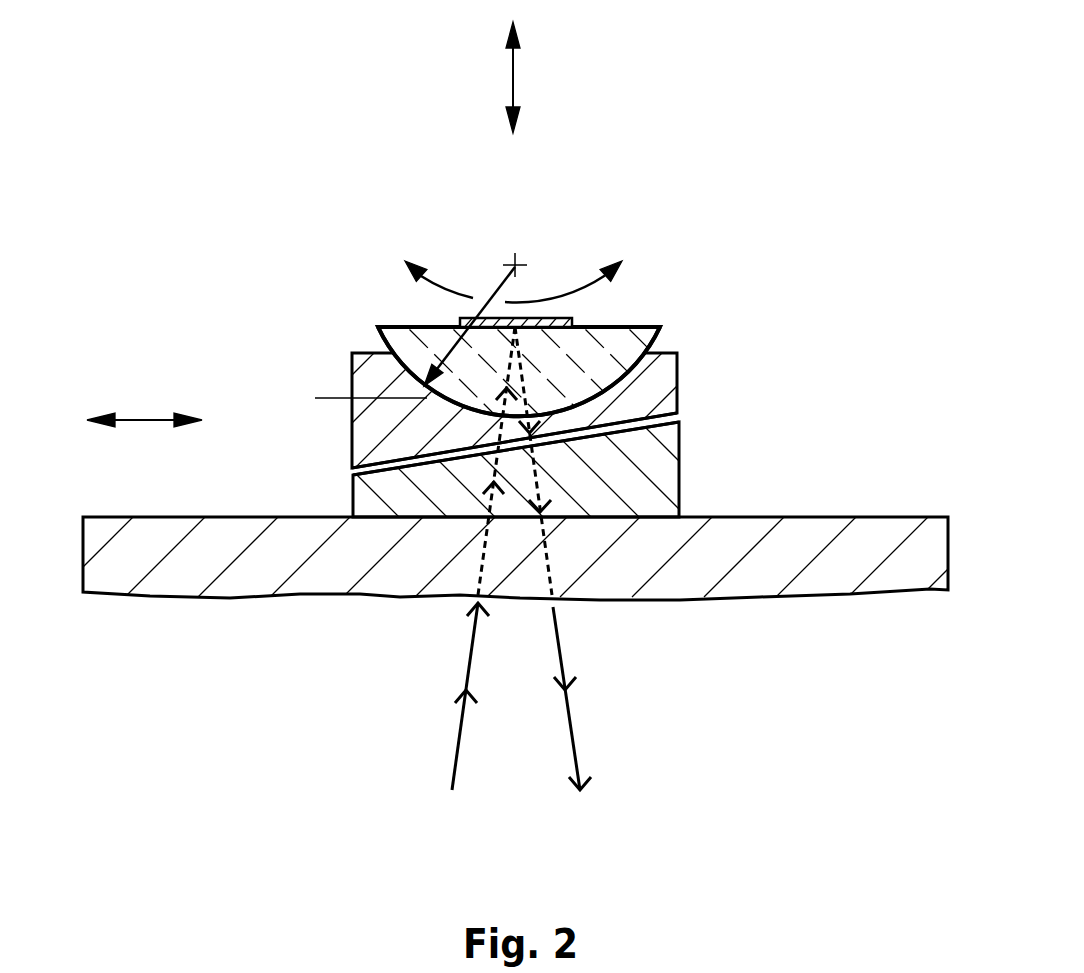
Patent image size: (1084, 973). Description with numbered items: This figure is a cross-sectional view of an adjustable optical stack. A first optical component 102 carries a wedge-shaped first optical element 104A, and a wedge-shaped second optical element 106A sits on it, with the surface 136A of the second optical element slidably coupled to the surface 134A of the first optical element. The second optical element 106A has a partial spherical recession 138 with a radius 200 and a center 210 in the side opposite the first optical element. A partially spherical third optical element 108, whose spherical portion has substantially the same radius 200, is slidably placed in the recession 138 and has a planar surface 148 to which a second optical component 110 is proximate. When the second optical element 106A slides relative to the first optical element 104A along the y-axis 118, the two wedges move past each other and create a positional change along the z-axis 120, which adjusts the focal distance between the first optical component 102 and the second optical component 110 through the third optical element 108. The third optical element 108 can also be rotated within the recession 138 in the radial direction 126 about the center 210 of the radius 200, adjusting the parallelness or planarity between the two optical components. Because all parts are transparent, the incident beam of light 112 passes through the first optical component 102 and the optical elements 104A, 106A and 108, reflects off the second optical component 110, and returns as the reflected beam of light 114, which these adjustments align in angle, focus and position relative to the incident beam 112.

The first optical component 102 is at (686, 577).
The first optical element 104A is at (681, 485).
The second optical element 106A is at (680, 388).
The third optical element 108 is at (662, 337).
The second optical component 110 is at (463, 322).
The incident beam of light 112 is at (455, 734).
The reflected beam of light 114 is at (577, 735).
The y-axis 118 is at (140, 418).
The z-axis 120 is at (513, 66).
The radial direction 126 is at (448, 287).
The surface of the first optical element 134A is at (360, 488).
The surface of the second optical element 136A is at (381, 462).
The spherical recession 138 is at (627, 372).
The planar surface 148 is at (387, 330).
The radius 200 is at (346, 398).
The center 210 is at (515, 258).